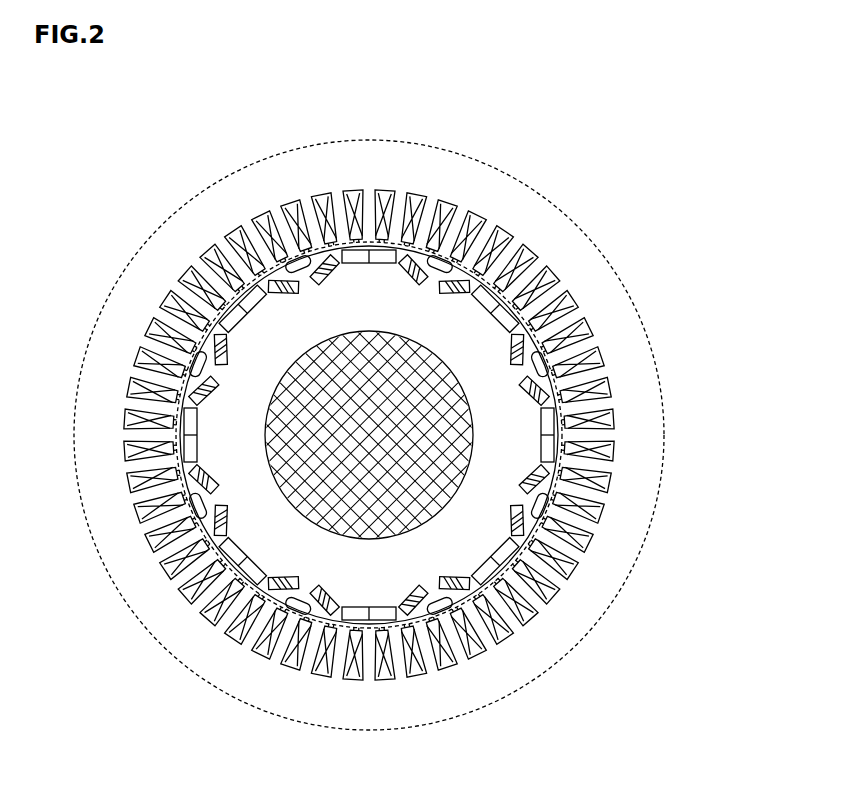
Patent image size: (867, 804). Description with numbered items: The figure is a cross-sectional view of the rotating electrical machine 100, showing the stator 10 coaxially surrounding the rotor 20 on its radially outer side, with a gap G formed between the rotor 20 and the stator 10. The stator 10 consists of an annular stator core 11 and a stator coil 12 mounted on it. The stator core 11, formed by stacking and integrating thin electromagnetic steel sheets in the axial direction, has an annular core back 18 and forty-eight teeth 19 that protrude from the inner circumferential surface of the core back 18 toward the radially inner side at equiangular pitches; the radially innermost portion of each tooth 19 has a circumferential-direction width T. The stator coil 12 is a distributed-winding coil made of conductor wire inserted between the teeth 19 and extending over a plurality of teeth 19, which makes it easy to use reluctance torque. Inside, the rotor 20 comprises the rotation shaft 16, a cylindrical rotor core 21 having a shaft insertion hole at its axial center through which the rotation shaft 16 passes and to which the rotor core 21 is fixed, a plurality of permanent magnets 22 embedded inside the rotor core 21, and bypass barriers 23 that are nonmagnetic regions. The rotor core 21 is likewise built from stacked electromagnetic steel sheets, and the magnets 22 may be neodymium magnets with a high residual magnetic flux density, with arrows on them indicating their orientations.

The rotating electrical machine 100 is at (172, 171).
The stator 10 is at (394, 416).
The stator core 11 is at (505, 190).
The stator coil 12 is at (517, 227).
The core back 18 is at (533, 252).
The teeth 19 is at (530, 272).
The gap G is at (534, 333).
The rotor 20 is at (507, 445).
The rotor core 21 is at (512, 470).
The rotation shaft 16 is at (472, 427).
The permanent magnets 22 is at (522, 527).
The bypass barriers 23 is at (447, 606).